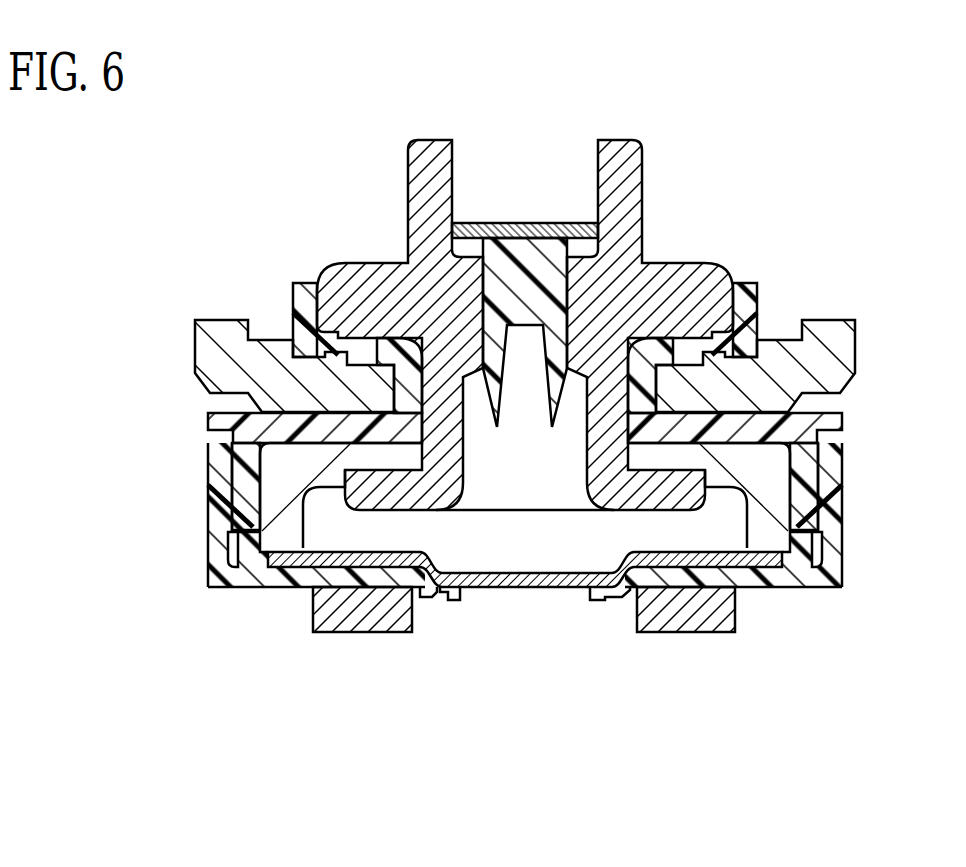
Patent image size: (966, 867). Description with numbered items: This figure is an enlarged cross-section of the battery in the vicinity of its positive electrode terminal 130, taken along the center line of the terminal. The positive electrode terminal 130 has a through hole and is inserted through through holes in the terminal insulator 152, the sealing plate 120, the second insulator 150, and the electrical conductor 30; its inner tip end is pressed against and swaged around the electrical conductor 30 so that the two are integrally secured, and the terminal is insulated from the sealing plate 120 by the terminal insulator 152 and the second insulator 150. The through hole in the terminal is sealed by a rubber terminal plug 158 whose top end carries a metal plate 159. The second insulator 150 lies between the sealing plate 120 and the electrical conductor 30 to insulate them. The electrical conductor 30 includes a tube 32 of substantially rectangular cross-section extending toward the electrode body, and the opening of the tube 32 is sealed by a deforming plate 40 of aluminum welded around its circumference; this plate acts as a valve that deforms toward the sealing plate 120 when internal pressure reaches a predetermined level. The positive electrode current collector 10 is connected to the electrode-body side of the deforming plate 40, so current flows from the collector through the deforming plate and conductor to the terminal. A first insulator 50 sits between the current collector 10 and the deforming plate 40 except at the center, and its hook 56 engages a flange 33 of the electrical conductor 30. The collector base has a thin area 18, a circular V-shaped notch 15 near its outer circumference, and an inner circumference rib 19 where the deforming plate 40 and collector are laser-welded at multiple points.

The positive electrode current collector 10 is at (360, 612).
The notch 15 is at (425, 598).
The thin area 18 is at (447, 601).
The inner circumference rib 19 is at (600, 601).
The electrical conductor 30 is at (261, 580).
The tube 32 is at (288, 506).
The flange 33 is at (238, 578).
The deforming plate 40 is at (718, 578).
The first insulator 50 is at (214, 490).
The hook 56 is at (240, 522).
The sealing plate 120 is at (220, 332).
The positive electrode terminal 130 is at (362, 277).
The second insulator 150 is at (222, 418).
The terminal insulator 152 is at (307, 285).
The terminal plug 158 is at (500, 257).
The metal plate 159 is at (551, 222).